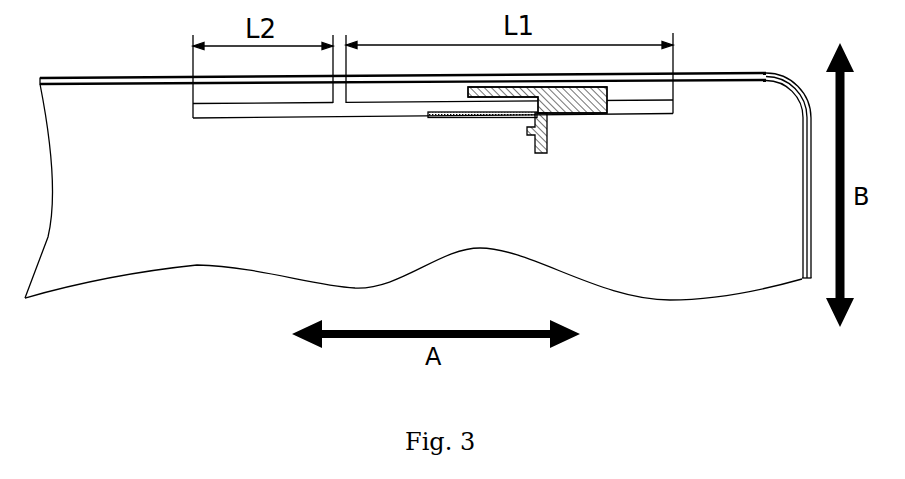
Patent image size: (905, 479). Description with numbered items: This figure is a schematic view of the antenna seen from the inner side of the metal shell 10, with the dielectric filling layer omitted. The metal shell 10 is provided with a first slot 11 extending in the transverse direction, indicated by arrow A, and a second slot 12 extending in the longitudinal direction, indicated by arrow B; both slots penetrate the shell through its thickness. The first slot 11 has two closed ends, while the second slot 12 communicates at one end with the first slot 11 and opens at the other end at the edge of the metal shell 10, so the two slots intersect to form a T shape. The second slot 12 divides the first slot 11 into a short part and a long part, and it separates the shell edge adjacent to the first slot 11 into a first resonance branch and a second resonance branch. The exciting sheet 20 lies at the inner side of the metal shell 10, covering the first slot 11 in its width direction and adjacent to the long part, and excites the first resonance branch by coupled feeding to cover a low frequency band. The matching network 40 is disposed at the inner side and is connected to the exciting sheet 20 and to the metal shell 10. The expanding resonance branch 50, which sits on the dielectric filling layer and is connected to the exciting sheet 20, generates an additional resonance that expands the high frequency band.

The metal shell 10 is at (90, 112).
The first slot 11 is at (373, 108).
The second slot 12 is at (335, 88).
The exciting sheet 20 is at (587, 113).
The matching network 40 is at (541, 153).
The expanding resonance branch 50 is at (475, 117).